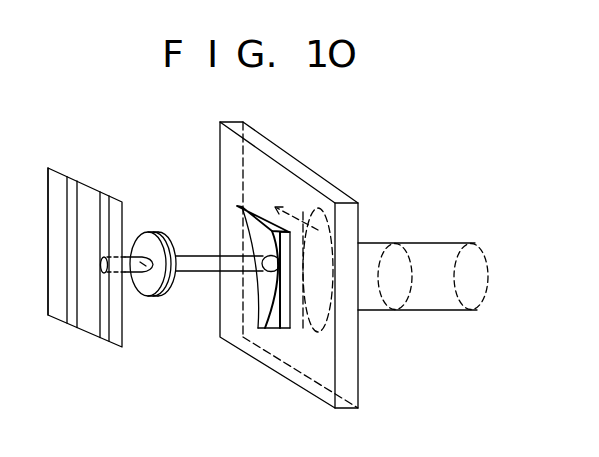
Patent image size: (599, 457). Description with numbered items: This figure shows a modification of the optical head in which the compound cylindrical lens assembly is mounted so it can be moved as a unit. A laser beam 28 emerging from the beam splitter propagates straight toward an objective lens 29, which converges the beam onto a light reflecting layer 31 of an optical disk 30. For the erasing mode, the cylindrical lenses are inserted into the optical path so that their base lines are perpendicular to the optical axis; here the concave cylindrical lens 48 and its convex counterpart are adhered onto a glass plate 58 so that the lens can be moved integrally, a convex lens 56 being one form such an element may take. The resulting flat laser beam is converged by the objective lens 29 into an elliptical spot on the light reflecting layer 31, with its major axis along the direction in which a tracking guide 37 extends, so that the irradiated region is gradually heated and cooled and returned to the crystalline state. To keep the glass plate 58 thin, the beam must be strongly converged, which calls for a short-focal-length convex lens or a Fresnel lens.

The laser beam 28 is at (433, 310).
The objective lens 29 is at (150, 296).
The optical disk 30 is at (83, 330).
The light reflecting layer 31 is at (57, 320).
The tracking guide 37 is at (107, 202).
The concave cylindrical lens 48 is at (258, 322).
The convex lens 56 is at (318, 245).
The glass plate 58 is at (310, 392).